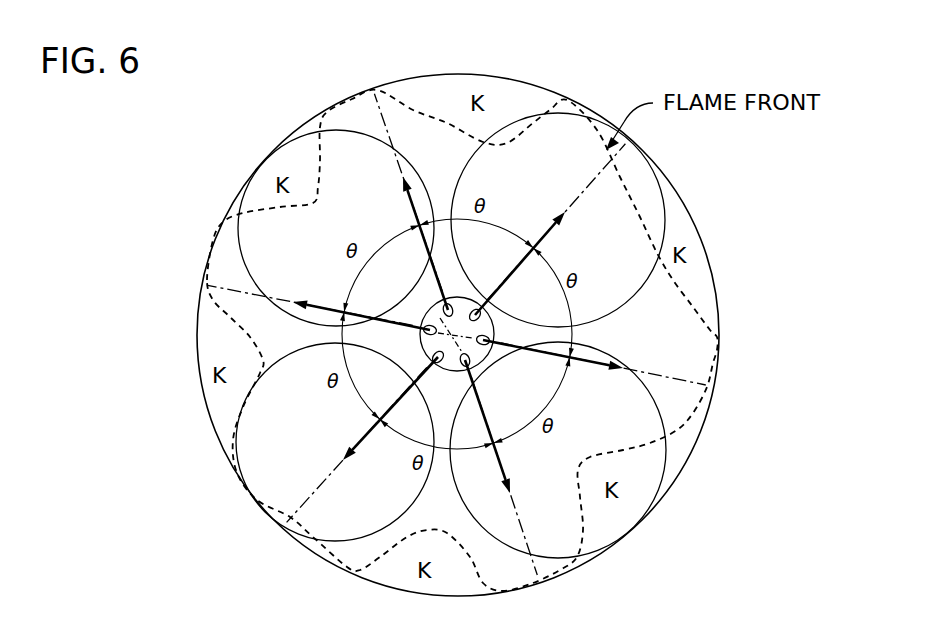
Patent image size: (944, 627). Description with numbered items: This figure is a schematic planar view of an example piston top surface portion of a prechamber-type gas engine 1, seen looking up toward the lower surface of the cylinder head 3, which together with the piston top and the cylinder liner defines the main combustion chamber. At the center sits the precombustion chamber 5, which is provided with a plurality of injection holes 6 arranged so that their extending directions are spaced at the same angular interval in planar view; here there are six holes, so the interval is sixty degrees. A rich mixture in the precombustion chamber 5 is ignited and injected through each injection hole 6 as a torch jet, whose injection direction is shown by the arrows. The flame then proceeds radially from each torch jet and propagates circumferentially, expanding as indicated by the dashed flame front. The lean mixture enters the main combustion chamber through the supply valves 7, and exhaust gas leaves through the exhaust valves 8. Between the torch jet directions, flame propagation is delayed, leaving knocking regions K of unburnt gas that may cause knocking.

The prechamber-type gas engine 1 is at (838, 215).
The cylinder head 3 is at (677, 323).
The precombustion chamber 5 is at (483, 317).
The injection hole 6 is at (483, 360).
The supply valve 7 is at (633, 187).
The exhaust valve 8 is at (263, 197).